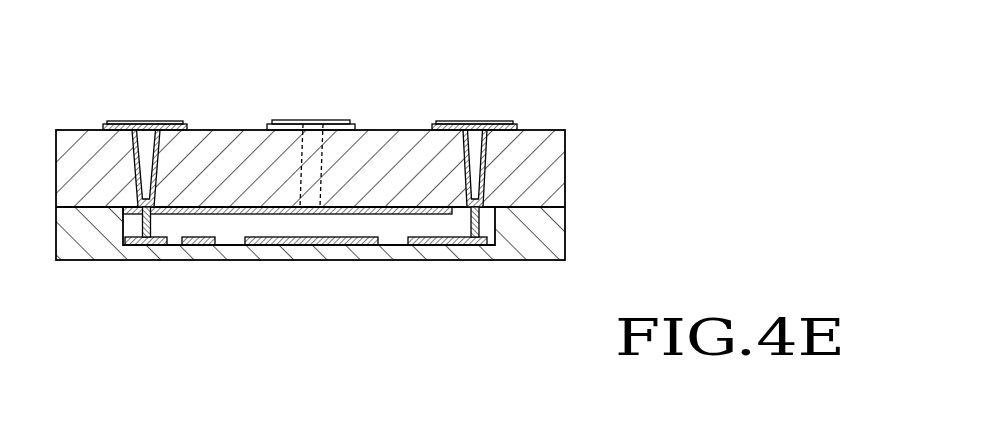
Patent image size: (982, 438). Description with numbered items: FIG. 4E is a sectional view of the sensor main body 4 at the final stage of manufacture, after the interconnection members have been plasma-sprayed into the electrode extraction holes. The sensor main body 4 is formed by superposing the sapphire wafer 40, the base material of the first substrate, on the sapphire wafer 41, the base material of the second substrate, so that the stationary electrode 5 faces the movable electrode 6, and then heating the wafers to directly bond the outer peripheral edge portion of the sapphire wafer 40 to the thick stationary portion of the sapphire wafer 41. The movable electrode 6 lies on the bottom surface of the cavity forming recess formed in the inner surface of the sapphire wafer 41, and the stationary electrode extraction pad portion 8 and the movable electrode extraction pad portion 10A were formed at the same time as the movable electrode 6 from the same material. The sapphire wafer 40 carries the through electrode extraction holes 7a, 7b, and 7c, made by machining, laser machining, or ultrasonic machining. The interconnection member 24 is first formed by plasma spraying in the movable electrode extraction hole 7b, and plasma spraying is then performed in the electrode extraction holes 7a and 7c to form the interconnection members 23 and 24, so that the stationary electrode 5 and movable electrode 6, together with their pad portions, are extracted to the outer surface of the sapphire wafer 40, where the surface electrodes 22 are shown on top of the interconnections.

The sensor main body 4 is at (640, 121).
The sapphire wafer 40 is at (567, 167).
The sapphire wafer 41 is at (567, 244).
The stationary electrode 5 is at (355, 216).
The movable electrode 6 is at (425, 246).
The stationary electrode extraction pad portion 8 is at (160, 243).
The movable electrode extraction pad portion 10A is at (485, 246).
The electrode extraction hole 7a is at (150, 121).
The movable electrode extraction hole 7b is at (473, 122).
The electrode extraction hole 7c is at (303, 124).
The surface electrode 22 is at (184, 124).
The interconnection member 23 is at (166, 121).
The interconnection member 24 is at (322, 121).